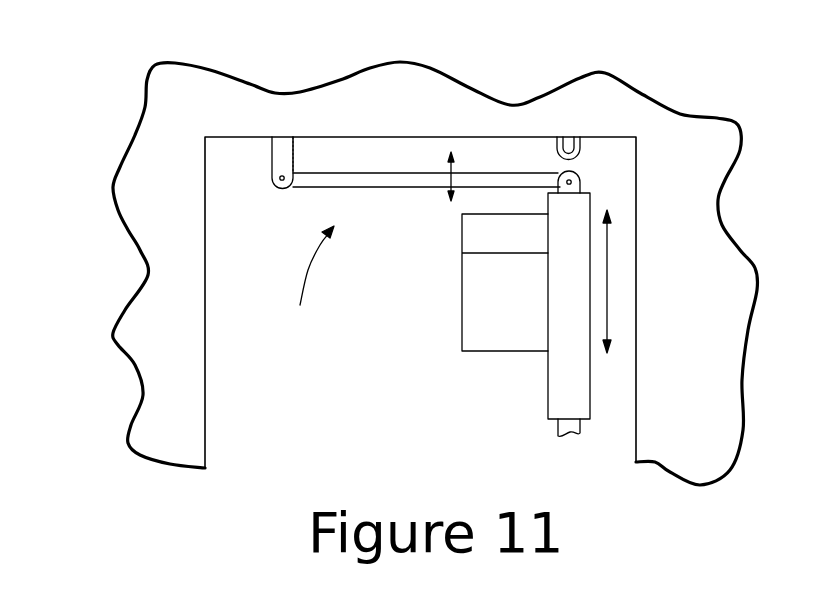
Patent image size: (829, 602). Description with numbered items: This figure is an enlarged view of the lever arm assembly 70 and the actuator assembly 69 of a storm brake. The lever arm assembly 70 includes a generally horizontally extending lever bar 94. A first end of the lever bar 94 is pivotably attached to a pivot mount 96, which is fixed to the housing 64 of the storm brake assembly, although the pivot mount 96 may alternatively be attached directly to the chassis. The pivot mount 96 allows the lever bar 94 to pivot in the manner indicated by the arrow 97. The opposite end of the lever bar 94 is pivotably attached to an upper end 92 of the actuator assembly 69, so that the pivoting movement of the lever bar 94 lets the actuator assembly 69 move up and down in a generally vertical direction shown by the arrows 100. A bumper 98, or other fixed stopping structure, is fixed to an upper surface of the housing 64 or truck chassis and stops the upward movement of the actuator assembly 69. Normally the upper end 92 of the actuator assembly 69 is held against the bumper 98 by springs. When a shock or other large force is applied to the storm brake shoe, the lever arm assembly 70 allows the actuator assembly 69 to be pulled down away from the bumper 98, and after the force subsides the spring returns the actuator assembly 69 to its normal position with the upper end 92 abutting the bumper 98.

The housing 64 is at (153, 328).
The actuator assembly 69 is at (499, 318).
The lever arm assembly 70 is at (310, 285).
The upper end 92 is at (569, 181).
The lever bar 94 is at (358, 180).
The pivot mount 96 is at (280, 150).
The arrow 97 is at (455, 177).
The bumper 98 is at (570, 145).
The arrows 100 is at (607, 278).